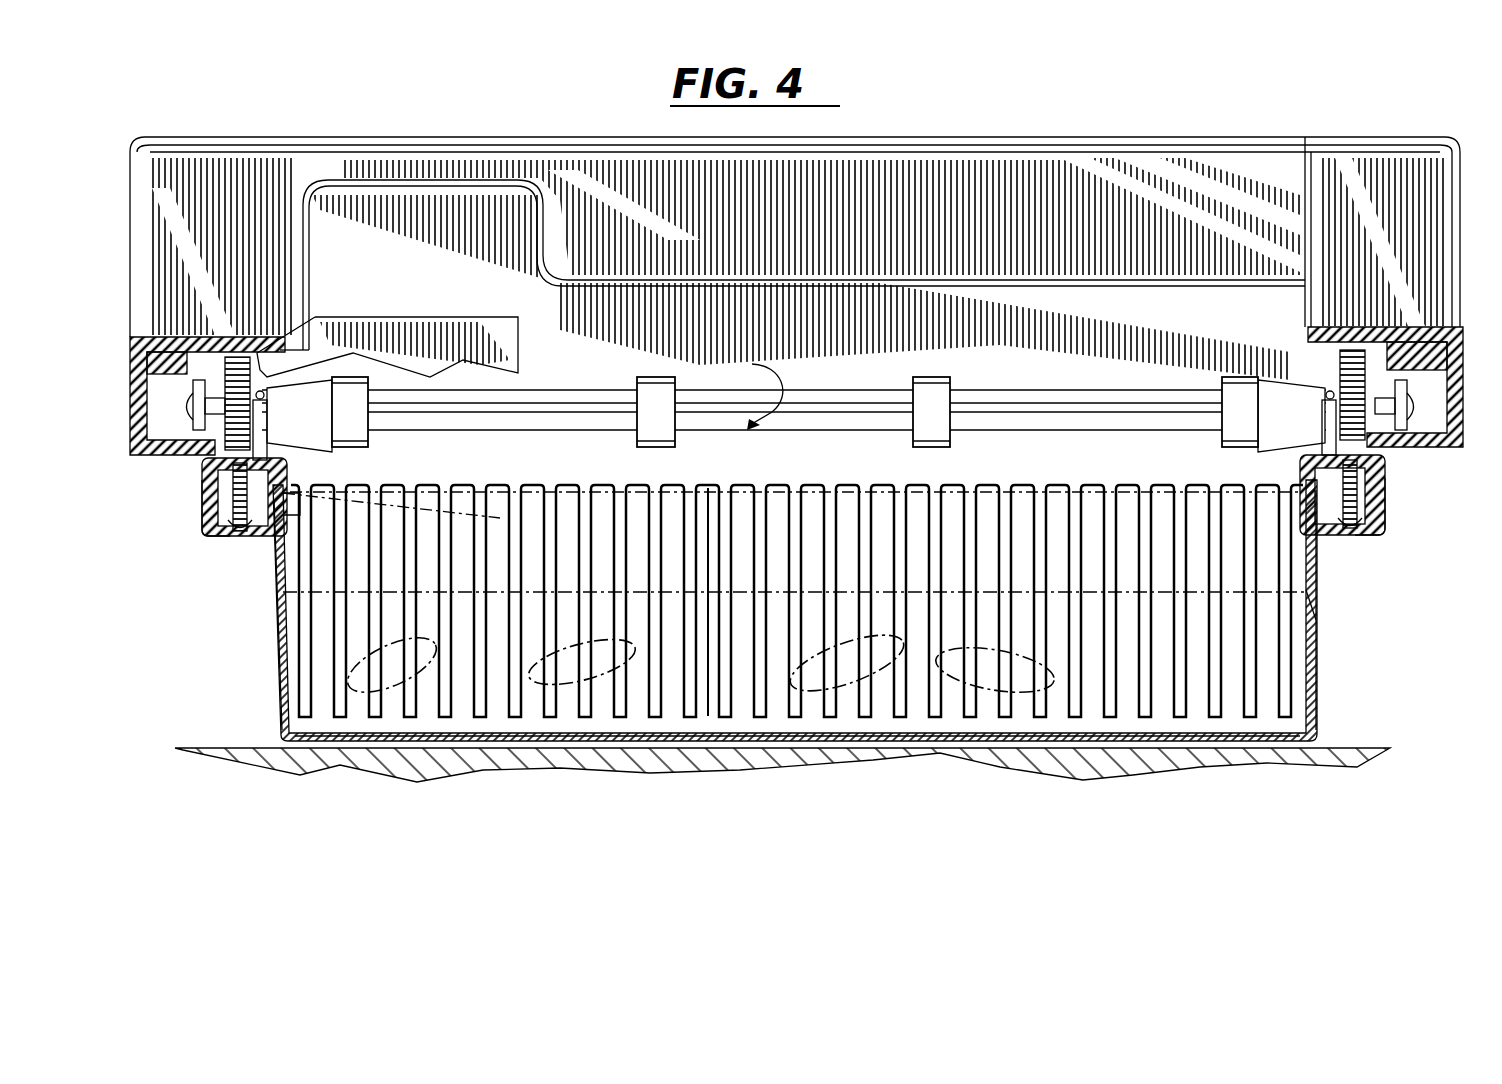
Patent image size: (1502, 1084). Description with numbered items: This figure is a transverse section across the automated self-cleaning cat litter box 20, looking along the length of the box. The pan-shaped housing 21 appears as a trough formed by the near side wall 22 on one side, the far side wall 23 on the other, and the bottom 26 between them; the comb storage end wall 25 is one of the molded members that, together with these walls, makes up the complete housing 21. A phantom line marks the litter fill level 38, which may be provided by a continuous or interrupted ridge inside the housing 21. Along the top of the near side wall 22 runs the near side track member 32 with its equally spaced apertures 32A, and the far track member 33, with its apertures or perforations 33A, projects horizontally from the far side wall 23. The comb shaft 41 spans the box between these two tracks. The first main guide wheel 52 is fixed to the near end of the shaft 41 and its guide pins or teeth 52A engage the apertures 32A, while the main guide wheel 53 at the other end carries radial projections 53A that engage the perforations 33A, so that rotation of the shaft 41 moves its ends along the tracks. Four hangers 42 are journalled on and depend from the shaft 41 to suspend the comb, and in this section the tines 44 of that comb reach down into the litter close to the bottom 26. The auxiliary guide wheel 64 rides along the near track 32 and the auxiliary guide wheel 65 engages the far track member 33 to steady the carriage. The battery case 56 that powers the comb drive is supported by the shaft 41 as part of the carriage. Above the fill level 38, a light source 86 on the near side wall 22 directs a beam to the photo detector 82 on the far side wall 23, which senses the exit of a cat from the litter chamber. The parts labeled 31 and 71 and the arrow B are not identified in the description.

The cat litter box 20 is at (1074, 132).
The pan-shaped housing 21 is at (1318, 613).
The near side wall 22 is at (277, 663).
The far side wall 23 is at (1318, 673).
The comb storage end wall 25 is at (1200, 723).
The bottom 26 is at (873, 750).
The screw 31 is at (240, 530).
The near side track member 32 is at (180, 457).
The apertures 32A is at (203, 493).
The track member 33 is at (1398, 450).
The apertures or perforations 33A is at (1383, 497).
The litter fill level line 38 is at (707, 592).
The comb shaft 41 is at (897, 403).
The hangers 42 is at (353, 400).
The tines 44 is at (1147, 708).
The first main guide wheel 52 is at (223, 405).
The guide pins or teeth 52A is at (233, 355).
The main guide wheel 53 is at (1353, 367).
The radial projections 53A is at (1398, 423).
The battery case 56 is at (478, 333).
The auxiliary guide wheel 64 is at (268, 413).
The auxiliary guide wheel 65 is at (1327, 417).
The developer 71 is at (567, 657).
The photo detector 82 is at (1296, 605).
The light source 86 is at (300, 515).
The rotation direction B is at (752, 364).